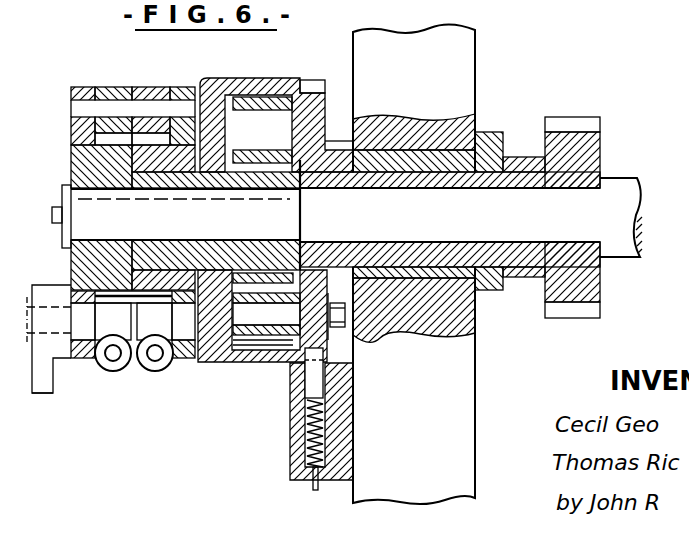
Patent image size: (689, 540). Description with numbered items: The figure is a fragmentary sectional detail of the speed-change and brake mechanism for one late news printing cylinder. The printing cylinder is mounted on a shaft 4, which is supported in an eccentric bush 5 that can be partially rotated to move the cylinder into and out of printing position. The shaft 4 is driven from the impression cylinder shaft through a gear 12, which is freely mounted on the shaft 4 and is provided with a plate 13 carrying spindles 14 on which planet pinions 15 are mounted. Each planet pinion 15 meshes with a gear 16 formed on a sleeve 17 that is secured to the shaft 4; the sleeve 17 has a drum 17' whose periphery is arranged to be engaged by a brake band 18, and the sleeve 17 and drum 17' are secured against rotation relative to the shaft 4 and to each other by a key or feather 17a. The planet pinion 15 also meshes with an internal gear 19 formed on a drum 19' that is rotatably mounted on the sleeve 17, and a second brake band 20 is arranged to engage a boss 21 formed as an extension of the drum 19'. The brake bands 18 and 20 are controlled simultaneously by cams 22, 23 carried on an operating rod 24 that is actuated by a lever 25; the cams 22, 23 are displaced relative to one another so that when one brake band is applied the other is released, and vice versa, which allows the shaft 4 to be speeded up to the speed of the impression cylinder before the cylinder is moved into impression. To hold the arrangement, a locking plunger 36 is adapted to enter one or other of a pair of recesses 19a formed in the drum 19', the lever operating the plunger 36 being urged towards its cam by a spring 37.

The shaft 4 is at (471, 217).
The eccentric bush 5 is at (495, 127).
The gear 12 is at (563, 124).
The plate 13 is at (308, 115).
The spindle 14 is at (266, 319).
The planet pinion 15 is at (233, 352).
The gear 16 is at (258, 142).
The sleeve 17 is at (185, 221).
The drum 17' is at (82, 217).
The key or feather 17a is at (100, 201).
The brake band 18 is at (112, 134).
The internal gear 19 is at (260, 119).
The drum 19' is at (276, 108).
The recess 19a is at (318, 80).
The second brake band 20 is at (150, 134).
The boss 21 is at (160, 157).
The cam 22 is at (113, 337).
The cam 23 is at (155, 337).
The operating rod 24 is at (87, 338).
The lever 25 is at (46, 402).
The locking plunger 36 is at (317, 385).
The spring 37 is at (326, 442).